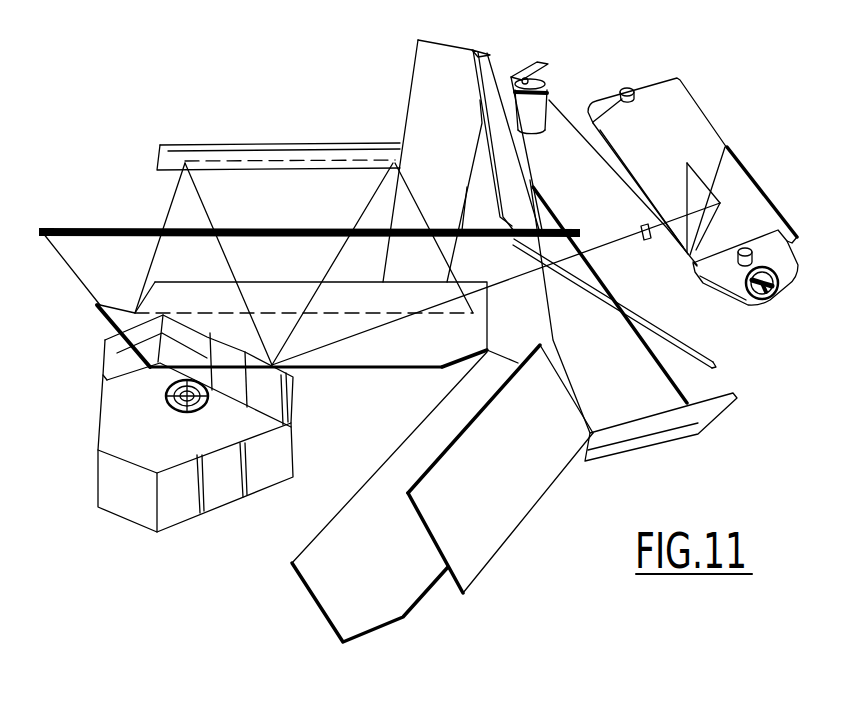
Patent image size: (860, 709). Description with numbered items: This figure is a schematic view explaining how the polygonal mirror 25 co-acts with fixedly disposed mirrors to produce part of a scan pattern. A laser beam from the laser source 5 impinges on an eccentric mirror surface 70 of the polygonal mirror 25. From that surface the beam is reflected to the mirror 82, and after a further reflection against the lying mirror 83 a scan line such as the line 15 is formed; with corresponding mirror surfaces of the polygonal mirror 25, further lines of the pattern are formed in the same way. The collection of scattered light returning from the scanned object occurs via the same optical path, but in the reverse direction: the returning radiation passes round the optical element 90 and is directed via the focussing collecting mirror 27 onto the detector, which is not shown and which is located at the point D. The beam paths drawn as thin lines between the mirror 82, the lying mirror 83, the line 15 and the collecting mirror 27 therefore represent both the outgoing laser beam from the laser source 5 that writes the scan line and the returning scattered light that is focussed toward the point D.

The roller 5 is at (546, 94).
The line 15 is at (124, 229).
The polygonal mirror 25 is at (180, 440).
The focussing collecting mirror 27 is at (698, 124).
The eccentric mirror surface 70 is at (281, 387).
The mirror 82 is at (298, 149).
The lying mirror 83 is at (303, 254).
The round optical element 90 is at (646, 239).
The point D is at (692, 266).